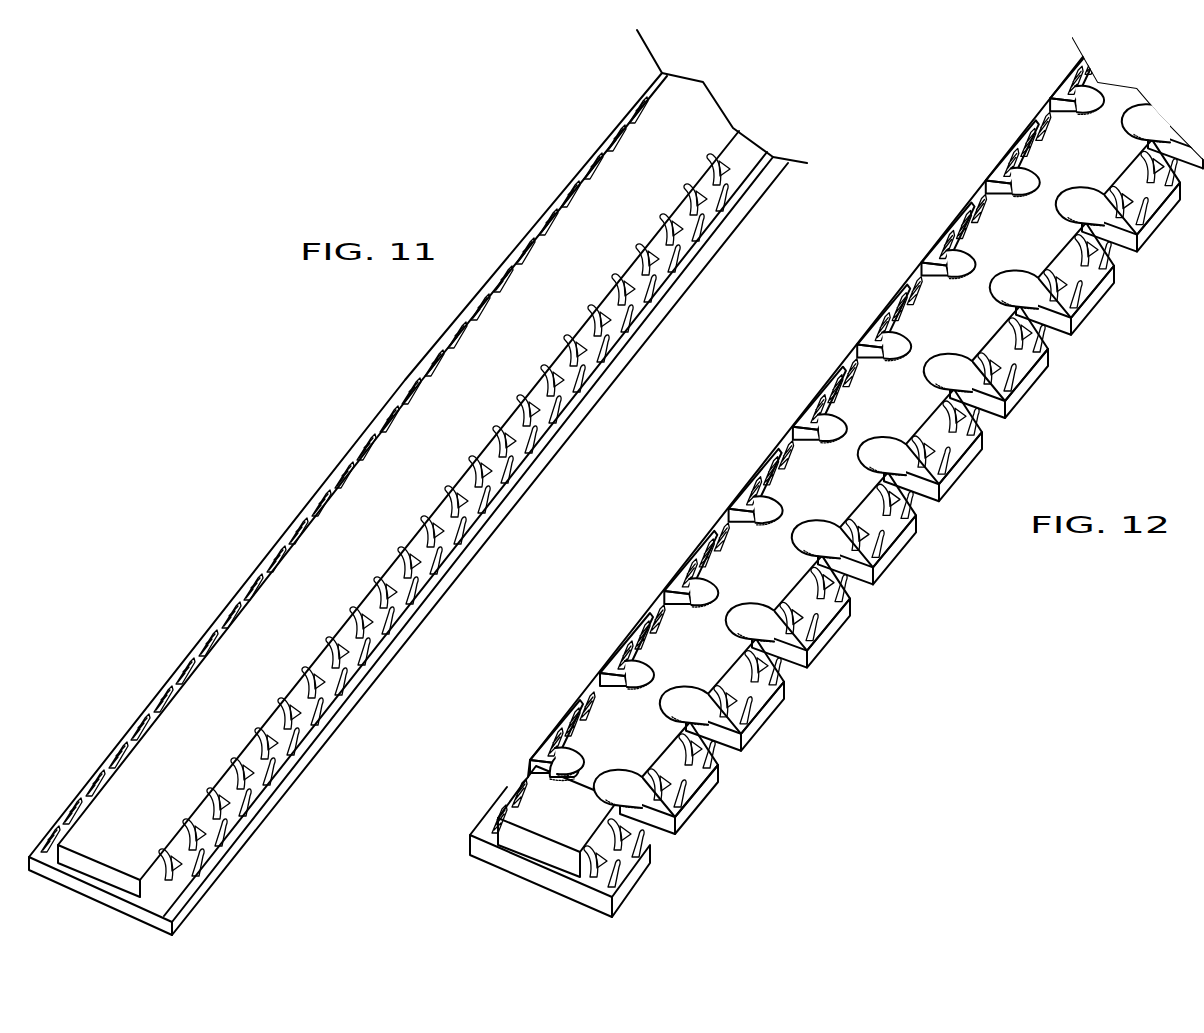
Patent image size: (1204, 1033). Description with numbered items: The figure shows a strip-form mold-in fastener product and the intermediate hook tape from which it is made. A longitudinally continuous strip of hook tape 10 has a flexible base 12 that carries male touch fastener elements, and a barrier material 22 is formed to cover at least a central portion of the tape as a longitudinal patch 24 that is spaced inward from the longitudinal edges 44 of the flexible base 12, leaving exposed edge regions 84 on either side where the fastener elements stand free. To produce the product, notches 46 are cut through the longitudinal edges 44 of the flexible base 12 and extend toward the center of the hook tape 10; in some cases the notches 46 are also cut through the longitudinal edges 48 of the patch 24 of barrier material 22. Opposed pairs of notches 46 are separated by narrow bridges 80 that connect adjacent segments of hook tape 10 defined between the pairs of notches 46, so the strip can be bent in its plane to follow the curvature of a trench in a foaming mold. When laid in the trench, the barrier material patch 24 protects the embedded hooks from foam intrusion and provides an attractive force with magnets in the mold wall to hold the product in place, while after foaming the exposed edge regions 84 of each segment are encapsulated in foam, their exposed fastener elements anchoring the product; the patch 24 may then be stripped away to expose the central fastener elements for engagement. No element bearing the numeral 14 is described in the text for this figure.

In FIG. 11, the hook tape 10 is at (418, 482).
In FIG. 12, the hook tape 10 is at (822, 476).
In FIG. 11, the flexible base 12 is at (387, 658).
In FIG. 12, the flexible base 12 is at (580, 906).
In FIG. 11, the hook fastener elements 14 is at (399, 606).
In FIG. 11, the barrier material 22 is at (234, 716).
In FIG. 12, the barrier material 22 is at (530, 848).
In FIG. 11, the longitudinal patch 24 is at (492, 382).
In FIG. 12, the longitudinal patch 24 is at (967, 332).
In FIG. 11, the longitudinal edges 44 is at (344, 474).
In FIG. 12, the longitudinal edges 44 is at (478, 819).
In FIG. 12, the notches 46 is at (515, 767).
In FIG. 11, the longitudinal edges 48 is at (355, 456).
In FIG. 12, the narrow bridges 80 is at (733, 607).
In FIG. 12, the exposed edge regions 84 is at (835, 393).